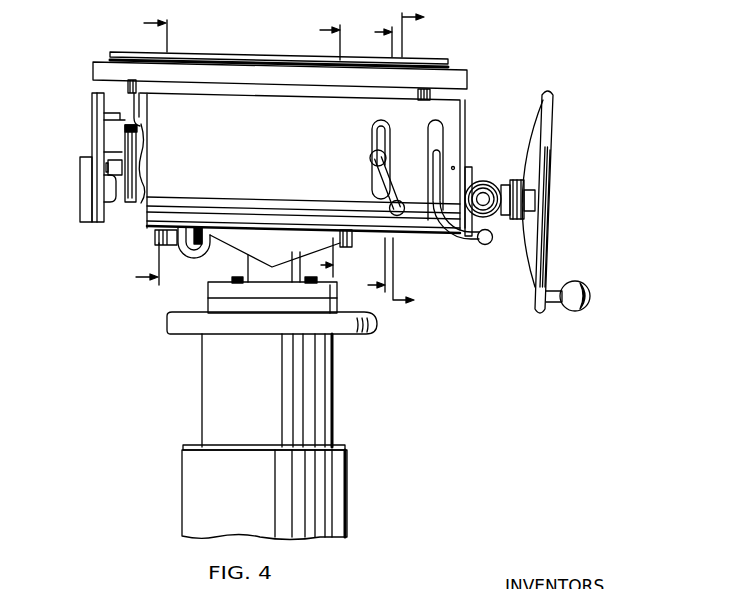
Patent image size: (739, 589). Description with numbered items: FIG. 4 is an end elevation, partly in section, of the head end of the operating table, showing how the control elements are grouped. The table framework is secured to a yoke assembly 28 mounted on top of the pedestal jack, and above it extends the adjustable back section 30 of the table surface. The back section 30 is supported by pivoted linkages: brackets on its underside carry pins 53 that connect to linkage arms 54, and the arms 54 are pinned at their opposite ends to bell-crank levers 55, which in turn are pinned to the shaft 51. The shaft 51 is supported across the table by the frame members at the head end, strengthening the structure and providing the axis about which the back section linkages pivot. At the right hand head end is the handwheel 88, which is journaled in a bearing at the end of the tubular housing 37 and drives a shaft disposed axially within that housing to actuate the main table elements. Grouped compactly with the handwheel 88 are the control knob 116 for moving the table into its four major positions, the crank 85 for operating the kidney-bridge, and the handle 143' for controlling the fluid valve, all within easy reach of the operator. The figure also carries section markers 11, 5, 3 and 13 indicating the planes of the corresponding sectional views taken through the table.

The back section 30 is at (96, 64).
The pin 53 is at (128, 87).
The bell-crank lever 55 is at (121, 152).
The linkage arm 54 is at (134, 170).
The shaft 51 is at (141, 127).
The tubular housing 37 is at (109, 196).
The yoke assembly 28 is at (204, 288).
The crank 85 is at (369, 181).
The control knob 116 is at (483, 185).
The handle 143' is at (474, 200).
The handwheel 88 is at (548, 243).
The section line 11- 11 is at (144, 151).
The section line 5- 5 is at (323, 149).
The section line 3- 3 is at (372, 159).
The section line 13- 13 is at (421, 159).